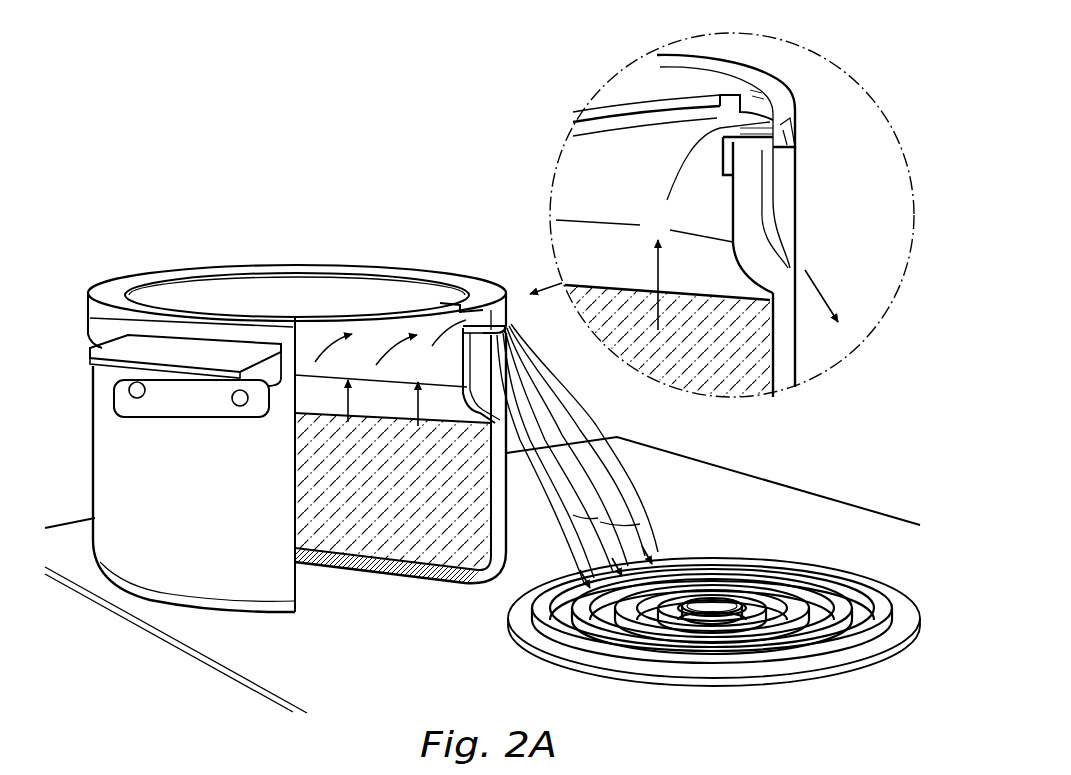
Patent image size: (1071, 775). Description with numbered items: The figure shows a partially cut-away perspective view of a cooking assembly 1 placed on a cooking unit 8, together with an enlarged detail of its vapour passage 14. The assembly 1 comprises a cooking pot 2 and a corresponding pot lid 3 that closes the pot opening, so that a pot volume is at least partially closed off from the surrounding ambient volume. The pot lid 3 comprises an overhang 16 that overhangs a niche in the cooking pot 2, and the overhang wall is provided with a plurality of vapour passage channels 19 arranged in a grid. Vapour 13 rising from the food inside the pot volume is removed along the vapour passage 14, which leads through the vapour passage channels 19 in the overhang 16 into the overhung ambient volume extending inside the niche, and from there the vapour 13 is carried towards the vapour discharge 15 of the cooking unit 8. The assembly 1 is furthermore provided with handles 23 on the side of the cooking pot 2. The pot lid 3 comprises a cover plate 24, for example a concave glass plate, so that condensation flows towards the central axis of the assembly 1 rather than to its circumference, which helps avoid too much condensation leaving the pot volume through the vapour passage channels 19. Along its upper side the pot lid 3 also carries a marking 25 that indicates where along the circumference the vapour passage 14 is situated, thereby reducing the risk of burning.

The cooking assembly 1 is at (114, 214).
The cooking pot 2 is at (113, 472).
The pot lid 3 is at (100, 317).
The cooking unit 8 is at (845, 526).
The vapour 13 is at (418, 403).
The vapour passage 14 is at (635, 524).
The vapour discharge 15 is at (755, 586).
The overhang 16 is at (505, 274).
The vapour passage channels 19 is at (778, 117).
The handles 23 is at (178, 376).
The cover plate 24 is at (290, 295).
The marking 25 is at (778, 76).